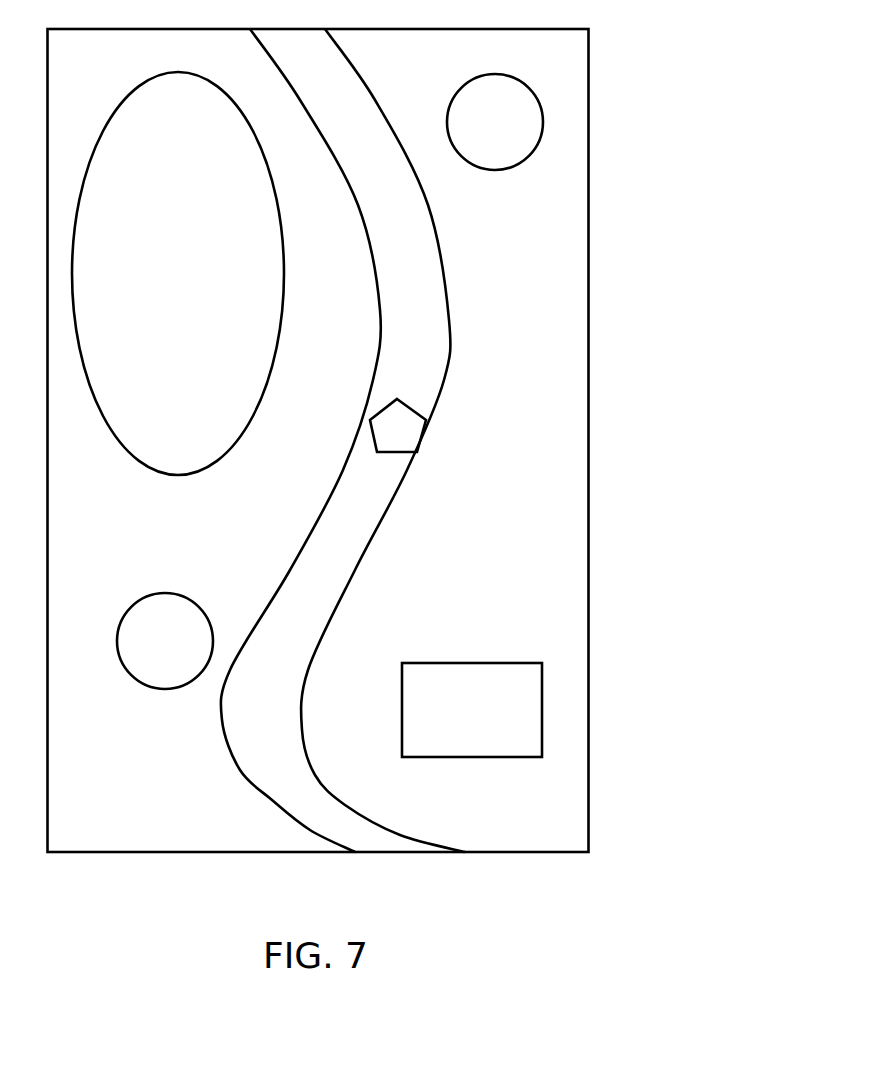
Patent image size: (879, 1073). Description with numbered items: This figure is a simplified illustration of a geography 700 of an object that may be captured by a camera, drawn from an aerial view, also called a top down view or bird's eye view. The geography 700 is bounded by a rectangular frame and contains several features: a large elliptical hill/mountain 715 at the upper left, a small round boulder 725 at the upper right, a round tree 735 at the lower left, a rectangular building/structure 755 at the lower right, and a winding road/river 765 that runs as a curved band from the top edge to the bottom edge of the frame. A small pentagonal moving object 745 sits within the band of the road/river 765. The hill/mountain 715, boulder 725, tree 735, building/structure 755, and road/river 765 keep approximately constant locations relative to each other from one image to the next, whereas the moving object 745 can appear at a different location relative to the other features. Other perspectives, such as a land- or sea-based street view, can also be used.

The simplified geography 700 is at (589, 30).
The hill/mountain 715 is at (198, 284).
The boulder 725 is at (516, 134).
The tree 735 is at (186, 652).
The moving object 745 is at (419, 436).
The building/structure 755 is at (493, 722).
The road/river 765 is at (432, 306).